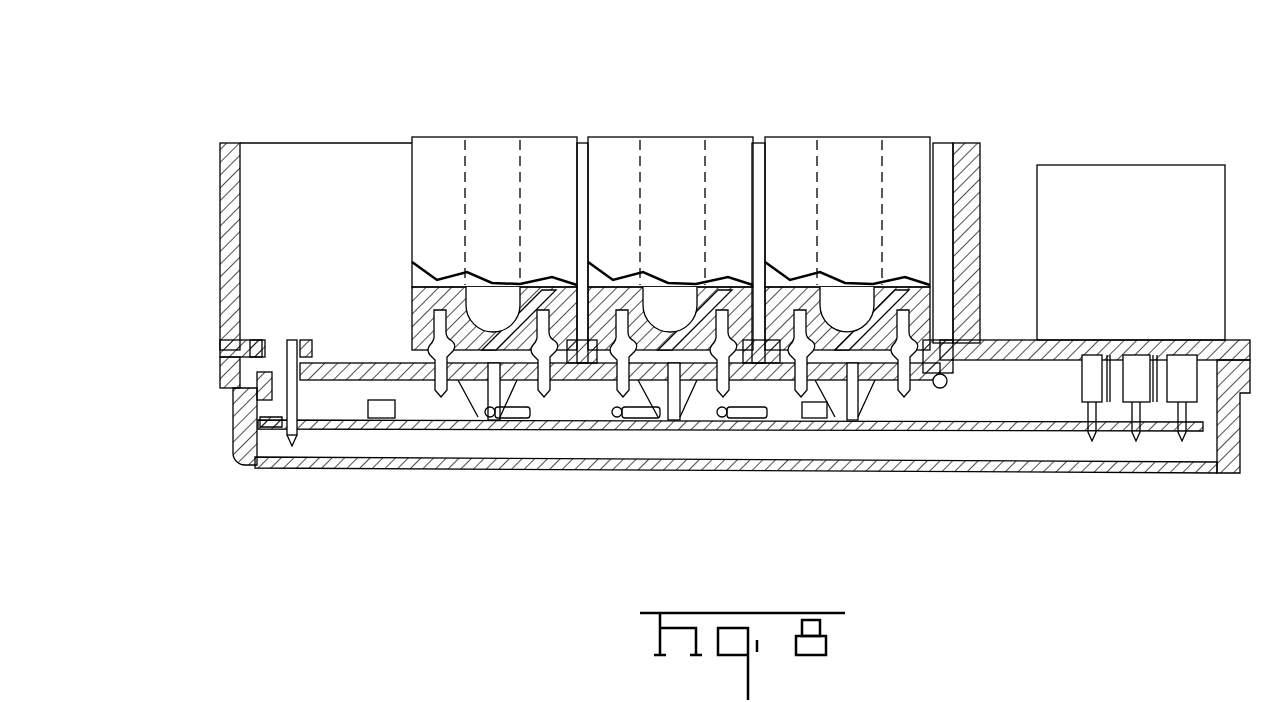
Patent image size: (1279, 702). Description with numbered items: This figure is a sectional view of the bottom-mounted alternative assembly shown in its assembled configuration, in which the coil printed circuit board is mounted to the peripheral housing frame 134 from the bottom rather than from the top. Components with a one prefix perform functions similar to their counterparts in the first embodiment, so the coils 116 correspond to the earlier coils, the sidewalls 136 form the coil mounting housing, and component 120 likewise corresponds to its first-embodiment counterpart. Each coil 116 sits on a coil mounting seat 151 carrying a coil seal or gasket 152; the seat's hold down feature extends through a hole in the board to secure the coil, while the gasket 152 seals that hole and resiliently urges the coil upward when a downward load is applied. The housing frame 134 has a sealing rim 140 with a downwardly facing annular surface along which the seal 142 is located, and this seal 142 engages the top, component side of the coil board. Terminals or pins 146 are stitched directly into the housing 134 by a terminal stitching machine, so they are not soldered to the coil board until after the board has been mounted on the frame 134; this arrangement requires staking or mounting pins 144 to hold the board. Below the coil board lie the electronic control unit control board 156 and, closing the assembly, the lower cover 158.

The coil 116 is at (724, 150).
The component 120 is at (1148, 188).
The peripheral housing frame 134 is at (955, 143).
The sidewalls 136 is at (980, 165).
The sealing rim 140 is at (300, 343).
The seal 142 is at (305, 378).
The staking or mounting pins 144 is at (266, 398).
The terminals or pins 146 is at (246, 470).
The coil mounting seat 151 is at (414, 298).
The coil seal or gasket 152 is at (410, 346).
The electronic control unit control board 156 is at (938, 432).
The lower cover 158 is at (900, 470).